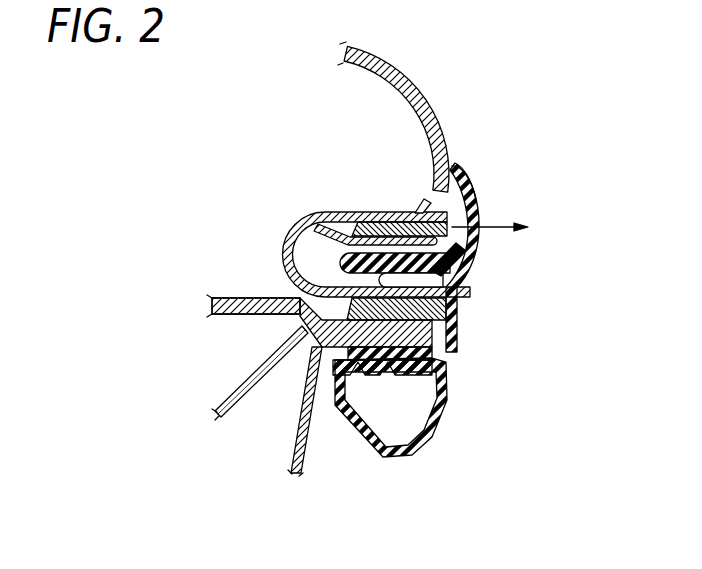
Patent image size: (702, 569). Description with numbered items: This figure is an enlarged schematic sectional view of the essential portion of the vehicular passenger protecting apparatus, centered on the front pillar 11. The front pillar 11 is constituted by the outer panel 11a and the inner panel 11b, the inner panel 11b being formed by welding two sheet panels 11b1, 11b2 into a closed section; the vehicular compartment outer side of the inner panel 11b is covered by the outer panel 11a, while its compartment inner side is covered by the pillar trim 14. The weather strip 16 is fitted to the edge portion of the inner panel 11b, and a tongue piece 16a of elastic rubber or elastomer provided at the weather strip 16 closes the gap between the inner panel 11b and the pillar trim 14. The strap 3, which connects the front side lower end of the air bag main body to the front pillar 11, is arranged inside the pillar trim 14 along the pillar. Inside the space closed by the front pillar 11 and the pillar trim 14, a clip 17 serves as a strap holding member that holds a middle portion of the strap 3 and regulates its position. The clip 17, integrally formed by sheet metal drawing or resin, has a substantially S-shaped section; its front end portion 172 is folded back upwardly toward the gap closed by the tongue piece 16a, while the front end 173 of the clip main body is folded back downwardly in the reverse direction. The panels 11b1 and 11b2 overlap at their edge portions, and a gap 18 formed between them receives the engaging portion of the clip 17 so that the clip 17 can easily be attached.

The strap 3 is at (362, 212).
The front pillar 11 is at (254, 441).
The outer panel 11a is at (290, 465).
The inner panel 11b is at (230, 294).
The panel 11b1 is at (275, 298).
The panel 11b2 is at (238, 392).
The pillar trim 14 is at (390, 64).
The weather strip 16 is at (458, 322).
The tongue piece 16a is at (468, 181).
The clip 17 is at (311, 213).
The front end portion 172 is at (423, 198).
The front end 173 is at (462, 259).
The gap 18 is at (440, 354).